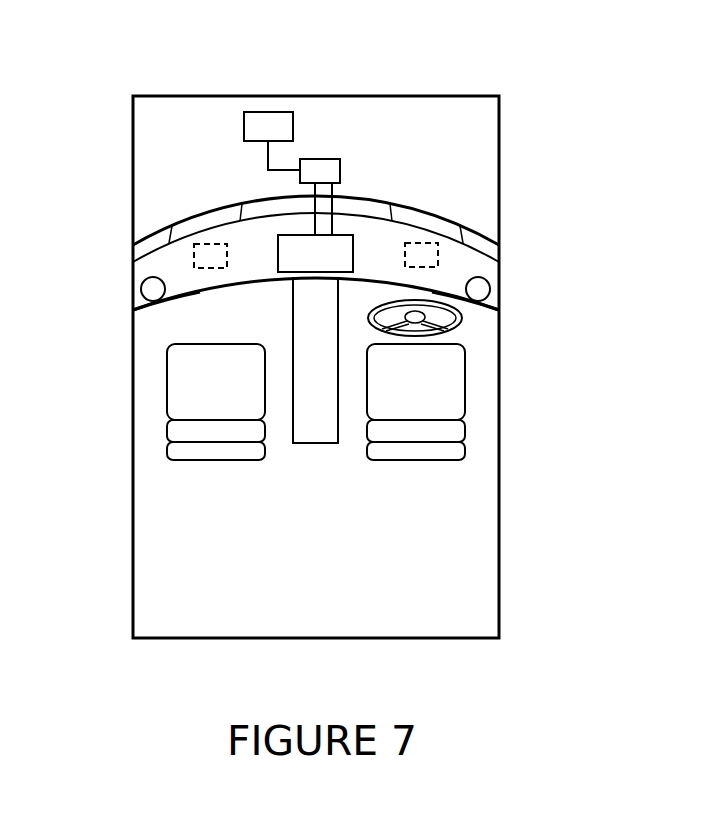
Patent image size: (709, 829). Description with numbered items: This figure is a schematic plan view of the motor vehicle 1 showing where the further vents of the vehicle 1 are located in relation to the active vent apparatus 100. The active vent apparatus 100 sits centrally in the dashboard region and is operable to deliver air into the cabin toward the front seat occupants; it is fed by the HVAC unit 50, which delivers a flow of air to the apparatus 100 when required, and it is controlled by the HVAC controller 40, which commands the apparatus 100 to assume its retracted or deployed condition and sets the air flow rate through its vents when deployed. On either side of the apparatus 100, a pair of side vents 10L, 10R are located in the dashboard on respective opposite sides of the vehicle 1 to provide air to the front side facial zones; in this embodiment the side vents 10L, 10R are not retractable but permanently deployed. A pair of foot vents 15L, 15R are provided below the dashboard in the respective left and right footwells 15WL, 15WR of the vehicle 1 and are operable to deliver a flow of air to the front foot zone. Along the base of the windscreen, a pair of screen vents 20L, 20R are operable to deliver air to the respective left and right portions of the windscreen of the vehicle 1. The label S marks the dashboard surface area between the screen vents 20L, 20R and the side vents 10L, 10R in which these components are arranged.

The motor vehicle 1 is at (625, 115).
The dashboard surface S is at (488, 270).
The left screen vent 20L is at (210, 220).
The right screen vent 20R is at (425, 220).
The HVAC controller 40 is at (263, 120).
The HVAC unit 50 is at (325, 167).
The active vent apparatus 100 is at (338, 253).
The left foot vent 15L is at (197, 260).
The right foot vent 15R is at (440, 255).
The left side vent 10L is at (143, 292).
The right side vent 10R is at (490, 292).
The left footwell 15WL is at (158, 317).
The right footwell 15WR is at (477, 317).